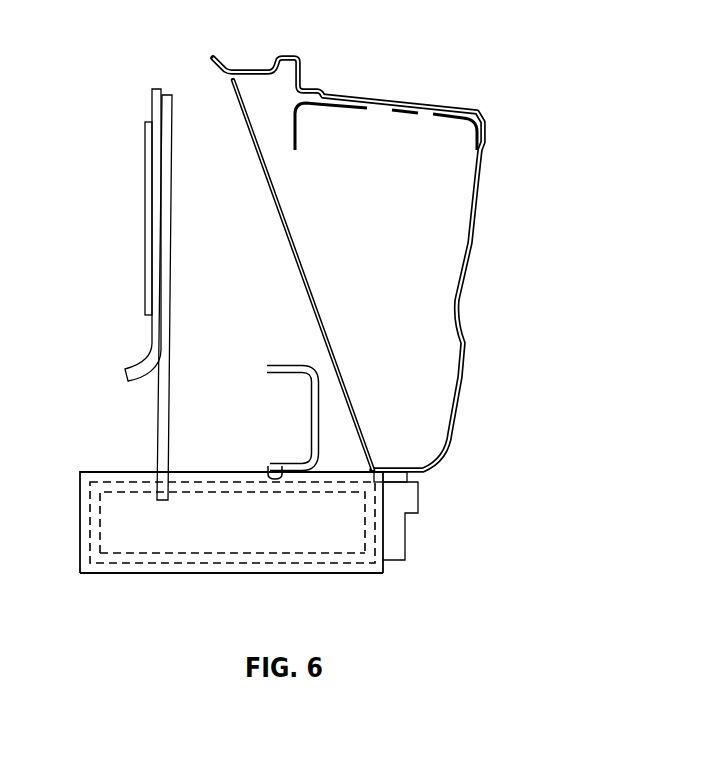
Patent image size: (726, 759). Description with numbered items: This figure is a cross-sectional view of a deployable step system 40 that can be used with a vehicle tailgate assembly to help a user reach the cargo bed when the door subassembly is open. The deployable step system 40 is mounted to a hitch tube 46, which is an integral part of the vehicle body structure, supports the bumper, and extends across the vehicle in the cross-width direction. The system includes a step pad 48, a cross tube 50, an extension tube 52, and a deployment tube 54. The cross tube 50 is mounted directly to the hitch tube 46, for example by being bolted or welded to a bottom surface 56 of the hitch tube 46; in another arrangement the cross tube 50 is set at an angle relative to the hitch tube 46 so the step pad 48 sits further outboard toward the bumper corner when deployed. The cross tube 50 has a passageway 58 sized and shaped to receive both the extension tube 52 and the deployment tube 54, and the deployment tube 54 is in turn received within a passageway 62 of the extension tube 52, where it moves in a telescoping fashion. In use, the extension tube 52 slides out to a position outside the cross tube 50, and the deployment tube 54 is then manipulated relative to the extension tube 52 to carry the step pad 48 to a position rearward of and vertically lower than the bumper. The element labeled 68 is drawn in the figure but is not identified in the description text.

The deployable step system 40 is at (276, 371).
The hitch tube 46 is at (318, 431).
The step pad 48 is at (510, 186).
The cross tube 50 is at (123, 575).
The extension tube 52 is at (220, 563).
The deployment tube 54 is at (278, 555).
The bottom surface 56 is at (279, 465).
The passageway 58 is at (170, 567).
The passageway 62 is at (235, 558).
The bracket 68 is at (412, 500).